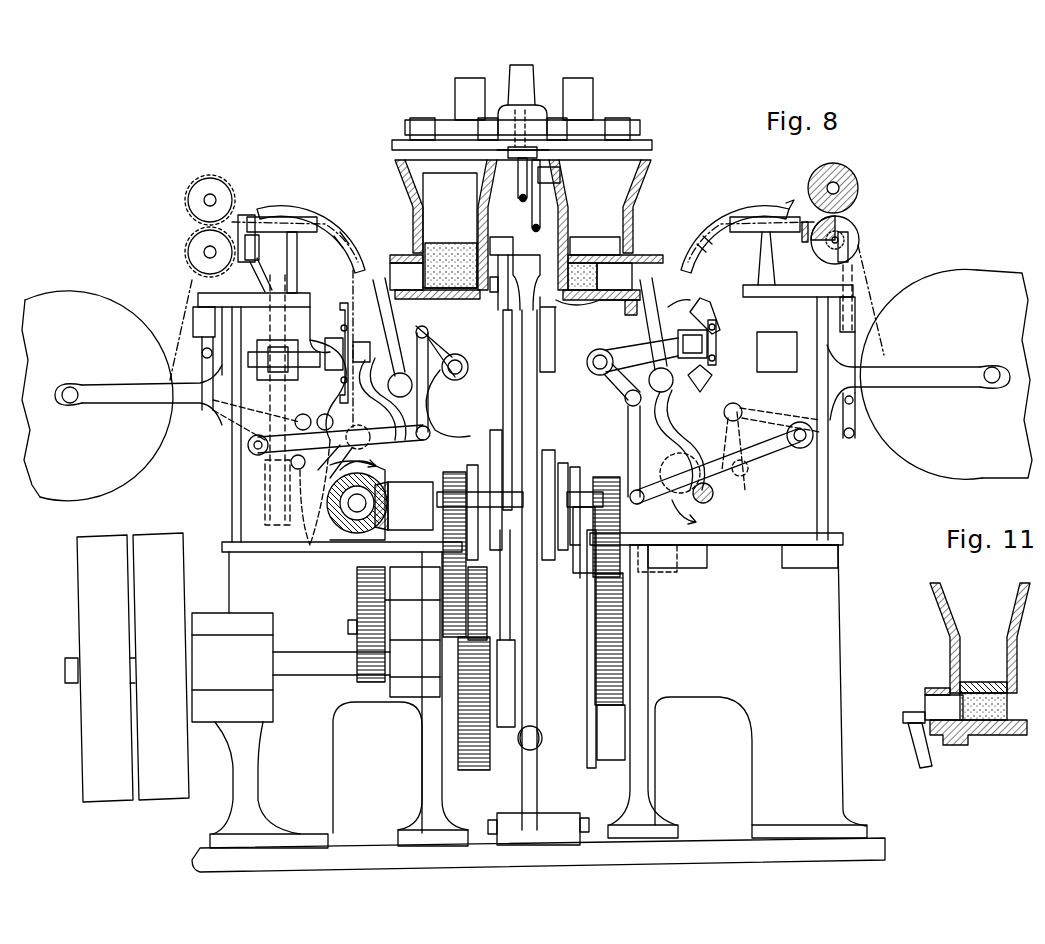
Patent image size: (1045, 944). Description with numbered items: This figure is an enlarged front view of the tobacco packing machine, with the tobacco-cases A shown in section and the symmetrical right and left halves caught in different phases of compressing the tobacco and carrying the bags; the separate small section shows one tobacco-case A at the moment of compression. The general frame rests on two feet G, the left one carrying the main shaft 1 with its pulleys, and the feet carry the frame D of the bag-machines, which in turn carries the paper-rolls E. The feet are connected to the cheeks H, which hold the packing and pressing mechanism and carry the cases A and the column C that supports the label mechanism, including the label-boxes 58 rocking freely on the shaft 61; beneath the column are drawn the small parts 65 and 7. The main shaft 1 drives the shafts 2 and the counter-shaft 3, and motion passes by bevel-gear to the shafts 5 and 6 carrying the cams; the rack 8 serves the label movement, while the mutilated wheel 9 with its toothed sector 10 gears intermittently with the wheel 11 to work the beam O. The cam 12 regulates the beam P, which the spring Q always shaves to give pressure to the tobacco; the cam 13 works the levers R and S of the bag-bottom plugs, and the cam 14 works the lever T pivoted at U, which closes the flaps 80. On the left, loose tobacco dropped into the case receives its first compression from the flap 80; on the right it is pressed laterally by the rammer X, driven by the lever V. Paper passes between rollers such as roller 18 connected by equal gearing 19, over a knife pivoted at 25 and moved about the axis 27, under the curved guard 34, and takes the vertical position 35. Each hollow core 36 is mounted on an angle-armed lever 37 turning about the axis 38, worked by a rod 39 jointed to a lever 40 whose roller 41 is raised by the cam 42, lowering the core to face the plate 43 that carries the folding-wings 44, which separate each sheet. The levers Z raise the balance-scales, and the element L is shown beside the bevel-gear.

In FIG. 8, the main shaft 1 is at (66, 674).
In FIG. 8, the shafts 2 is at (546, 668).
In FIG. 8, the counter-shaft 3 is at (356, 607).
In FIG. 8, the shaft 5 is at (352, 512).
In FIG. 8, the shaft 6 is at (704, 504).
In FIG. 8, the rod 7 is at (540, 206).
In FIG. 8, the rack 8 is at (382, 399).
In FIG. 8, the mutilated wheel 9 is at (603, 757).
In FIG. 8, the toothed sector 10 is at (590, 613).
In FIG. 8, the wheel 11 is at (610, 478).
In FIG. 8, the cam 12 is at (548, 452).
In FIG. 8, the cam 13 is at (563, 464).
In FIG. 8, the cam 14 is at (470, 470).
In FIG. 8, the roller 18 is at (858, 192).
In FIG. 8, the gearing 19 is at (188, 205).
In FIG. 8, the pivot of toothed knife 25 is at (250, 218).
In FIG. 8, the axis 27 is at (274, 272).
In FIG. 8, the curved guard 34 is at (328, 225).
In FIG. 8, the vertical position of paper 35 is at (350, 270).
In FIG. 8, the hollow core 36 is at (680, 330).
In FIG. 8, the angle-armed lever 37 is at (438, 342).
In FIG. 8, the axis 38 is at (458, 372).
In FIG. 8, the rod 39 is at (442, 390).
In FIG. 8, the lever 40 is at (408, 448).
In FIG. 8, the roller 41 is at (360, 436).
In FIG. 8, the cam 42 is at (358, 449).
In FIG. 8, the plate 43 is at (718, 346).
In FIG. 8, the folding-wings 44 is at (340, 322).
In FIG. 8, the label-box 58 is at (456, 90).
In FIG. 8, the shaft 61 is at (640, 120).
In FIG. 8, the rod 65 is at (517, 199).
In FIG. 8, the flap 80 is at (450, 230).
In FIG. 11, the flap 80 is at (992, 681).
In FIG. 8, the tobacco-case A is at (400, 180).
In FIG. 8, the column C is at (534, 80).
In FIG. 8, the frame D is at (231, 513).
In FIG. 8, the paper-roll E is at (122, 396).
In FIG. 8, the foot G is at (256, 778).
In FIG. 8, the cheek H is at (424, 744).
In FIG. 8, the block L is at (396, 500).
In FIG. 8, the beam O is at (515, 273).
In FIG. 8, the beam P is at (540, 408).
In FIG. 8, the spring Q is at (544, 738).
In FIG. 8, the lever R is at (576, 468).
In FIG. 8, the lever S is at (676, 430).
In FIG. 8, the lever T is at (487, 410).
In FIG. 8, the pivot U is at (440, 432).
In FIG. 8, the lever V is at (396, 320).
In FIG. 8, the lateral rammer X is at (435, 277).
In FIG. 8, the lever Z is at (526, 688).